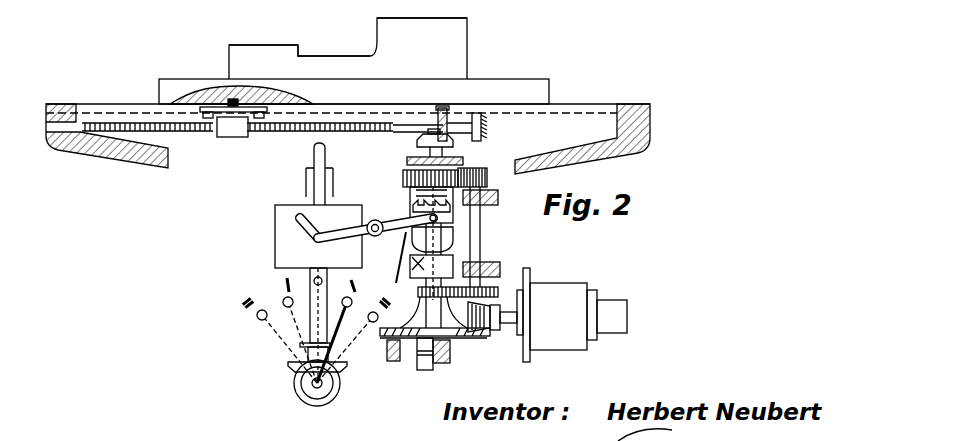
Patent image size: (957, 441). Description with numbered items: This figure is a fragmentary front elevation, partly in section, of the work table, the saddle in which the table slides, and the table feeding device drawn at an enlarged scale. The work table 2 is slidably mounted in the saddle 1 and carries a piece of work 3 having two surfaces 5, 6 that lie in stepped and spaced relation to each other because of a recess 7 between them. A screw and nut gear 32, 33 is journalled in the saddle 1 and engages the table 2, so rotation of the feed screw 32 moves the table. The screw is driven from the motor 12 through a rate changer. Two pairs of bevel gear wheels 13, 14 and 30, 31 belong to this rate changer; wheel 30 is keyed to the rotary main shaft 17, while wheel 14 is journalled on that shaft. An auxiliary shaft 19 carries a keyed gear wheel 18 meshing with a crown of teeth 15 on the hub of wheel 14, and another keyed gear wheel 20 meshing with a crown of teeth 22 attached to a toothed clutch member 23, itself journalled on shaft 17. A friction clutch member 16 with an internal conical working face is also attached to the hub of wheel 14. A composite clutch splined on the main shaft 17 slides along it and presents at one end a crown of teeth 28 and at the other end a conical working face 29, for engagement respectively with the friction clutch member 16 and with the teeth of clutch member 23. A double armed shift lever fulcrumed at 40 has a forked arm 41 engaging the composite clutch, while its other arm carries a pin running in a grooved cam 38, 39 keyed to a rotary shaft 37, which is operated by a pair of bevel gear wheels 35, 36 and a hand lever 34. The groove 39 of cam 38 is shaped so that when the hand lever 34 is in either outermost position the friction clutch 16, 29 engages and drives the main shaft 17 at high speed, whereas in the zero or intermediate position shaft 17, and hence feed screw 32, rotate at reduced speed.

The saddle 1 is at (652, 122).
The work table 2 is at (535, 89).
The piece of work 3 is at (447, 52).
The surface 5 is at (412, 20).
The surface 6 is at (248, 44).
The recess 7 is at (325, 56).
The motor 12 is at (568, 305).
The bevel gear wheel 13 is at (500, 331).
The bevel gear wheel 14 is at (392, 338).
The crown of teeth 15 is at (383, 328).
The friction clutch member 16 is at (446, 268).
The rotary shaft 17 is at (420, 363).
The gear wheel 18 is at (497, 278).
The auxiliary shaft 19 is at (480, 220).
The gear wheel 20 is at (487, 178).
The crown of teeth 22 is at (405, 175).
The toothed clutch member 23 is at (410, 190).
The crown of teeth 28 is at (413, 208).
The conical working face 29 is at (452, 236).
The bevel gear wheel 30 is at (417, 143).
The bevel gear wheel 31 is at (447, 118).
The feed screw 32 is at (287, 131).
The nut 33 is at (233, 126).
The hand lever 34 is at (335, 365).
The bevel gear wheel 35 is at (330, 405).
The bevel gear wheel 36 is at (333, 387).
The rotary shaft 37 is at (325, 155).
The grooved cam 38 is at (285, 228).
The groove 39 is at (313, 225).
The fulcrum 40 is at (375, 236).
The forked arm 41 is at (403, 229).